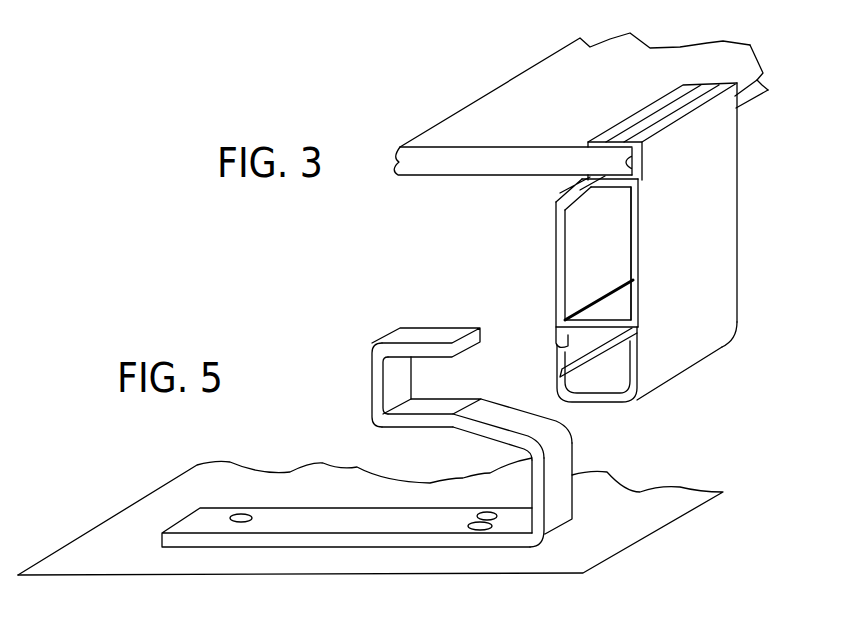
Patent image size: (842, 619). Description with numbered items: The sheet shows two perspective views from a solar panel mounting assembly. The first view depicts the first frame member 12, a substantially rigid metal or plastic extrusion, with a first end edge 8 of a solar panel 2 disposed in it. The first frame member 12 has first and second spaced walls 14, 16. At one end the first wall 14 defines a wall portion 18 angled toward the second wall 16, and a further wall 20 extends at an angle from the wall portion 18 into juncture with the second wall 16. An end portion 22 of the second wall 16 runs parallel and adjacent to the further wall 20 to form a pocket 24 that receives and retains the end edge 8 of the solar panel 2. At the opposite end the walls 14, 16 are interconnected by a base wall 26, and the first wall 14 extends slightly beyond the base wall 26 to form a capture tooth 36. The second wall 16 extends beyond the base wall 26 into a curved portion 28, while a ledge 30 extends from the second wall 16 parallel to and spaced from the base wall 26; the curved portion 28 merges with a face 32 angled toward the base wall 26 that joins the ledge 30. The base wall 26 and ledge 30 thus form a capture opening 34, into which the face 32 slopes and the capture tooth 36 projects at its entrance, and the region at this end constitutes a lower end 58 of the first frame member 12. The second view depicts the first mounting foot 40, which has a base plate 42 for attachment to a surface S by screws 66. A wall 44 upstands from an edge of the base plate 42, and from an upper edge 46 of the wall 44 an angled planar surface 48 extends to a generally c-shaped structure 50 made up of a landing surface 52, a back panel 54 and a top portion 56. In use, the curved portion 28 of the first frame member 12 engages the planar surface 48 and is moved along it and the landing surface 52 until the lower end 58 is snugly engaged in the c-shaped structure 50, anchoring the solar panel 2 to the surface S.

In FIG. 3, the solar panel 2 is at (652, 50).
In FIG. 3, the first end edge 8 is at (760, 82).
In FIG. 3, the first frame member 12 is at (717, 233).
In FIG. 3, the first wall 14 is at (556, 228).
In FIG. 3, the second wall 16 is at (693, 273).
In FIG. 3, the wall portion 18 is at (572, 185).
In FIG. 3, the further wall 20 is at (640, 210).
In FIG. 3, the end portion 22 is at (690, 110).
In FIG. 3, the pocket 24 is at (632, 165).
In FIG. 3, the base wall 26 is at (597, 312).
In FIG. 3, the curved portion 28 is at (618, 402).
In FIG. 3, the ledge 30 is at (640, 342).
In FIG. 3, the face 32 is at (590, 346).
In FIG. 3, the capture opening 34 is at (548, 366).
In FIG. 3, the capture tooth 36 is at (548, 340).
In FIG. 3, the lower end 58 is at (687, 358).
In FIG. 5, the first mounting foot 40 is at (388, 431).
In FIG. 5, the base plate 42 is at (315, 490).
In FIG. 5, the wall 44 is at (562, 495).
In FIG. 5, the upper edge 46 is at (572, 457).
In FIG. 5, the angled planar surface 48 is at (540, 413).
In FIG. 5, the c-shaped structure 50 is at (398, 346).
In FIG. 5, the landing surface 52 is at (430, 402).
In FIG. 5, the back panel 54 is at (370, 385).
In FIG. 5, the top portion 56 is at (432, 337).
In FIG. 5, the screws 66 is at (240, 513).
In FIG. 5, the surface S is at (642, 513).